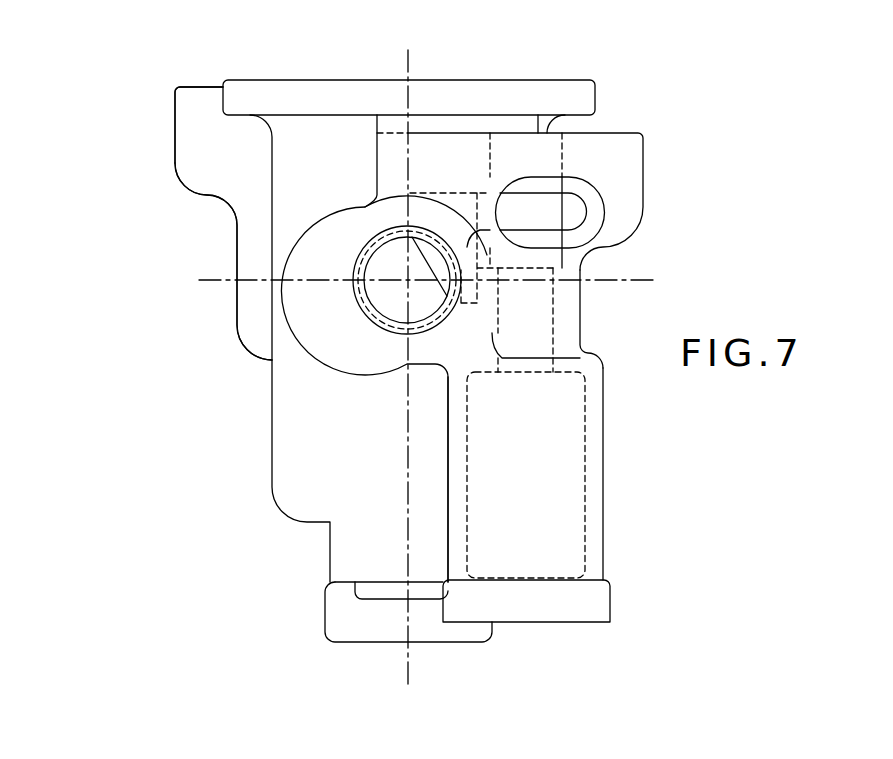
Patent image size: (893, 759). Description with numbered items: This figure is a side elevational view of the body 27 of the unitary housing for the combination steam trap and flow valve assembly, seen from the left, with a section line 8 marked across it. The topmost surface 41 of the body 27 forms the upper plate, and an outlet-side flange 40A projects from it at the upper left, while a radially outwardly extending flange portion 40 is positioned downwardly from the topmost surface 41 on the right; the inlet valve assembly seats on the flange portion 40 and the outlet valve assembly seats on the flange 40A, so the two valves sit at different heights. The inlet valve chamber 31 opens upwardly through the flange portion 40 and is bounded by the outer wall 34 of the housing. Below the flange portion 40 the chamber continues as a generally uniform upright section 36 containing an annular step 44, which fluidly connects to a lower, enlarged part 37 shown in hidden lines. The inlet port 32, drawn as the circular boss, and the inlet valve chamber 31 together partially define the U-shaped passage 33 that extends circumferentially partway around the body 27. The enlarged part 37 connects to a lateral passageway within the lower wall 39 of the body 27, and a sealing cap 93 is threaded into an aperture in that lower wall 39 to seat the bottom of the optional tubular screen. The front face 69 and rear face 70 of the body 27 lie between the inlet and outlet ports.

The section line 8- 8 is at (199, 280).
The body 27 is at (127, 150).
The inlet valve chamber 31 is at (563, 155).
The inlet port 32 is at (363, 322).
The U-shaped passage 33 is at (460, 193).
The outer wall 34 is at (268, 382).
The upright section 36 is at (555, 297).
The enlarged part 37 is at (578, 448).
The lower wall 39 is at (433, 643).
The flange portion 40 is at (613, 133).
The flange 40A is at (198, 86).
The topmost surface 41 is at (317, 80).
The annular step 44 is at (553, 268).
The front face 69 is at (215, 341).
The rear face 70 is at (621, 381).
The sealing cap 93 is at (563, 623).